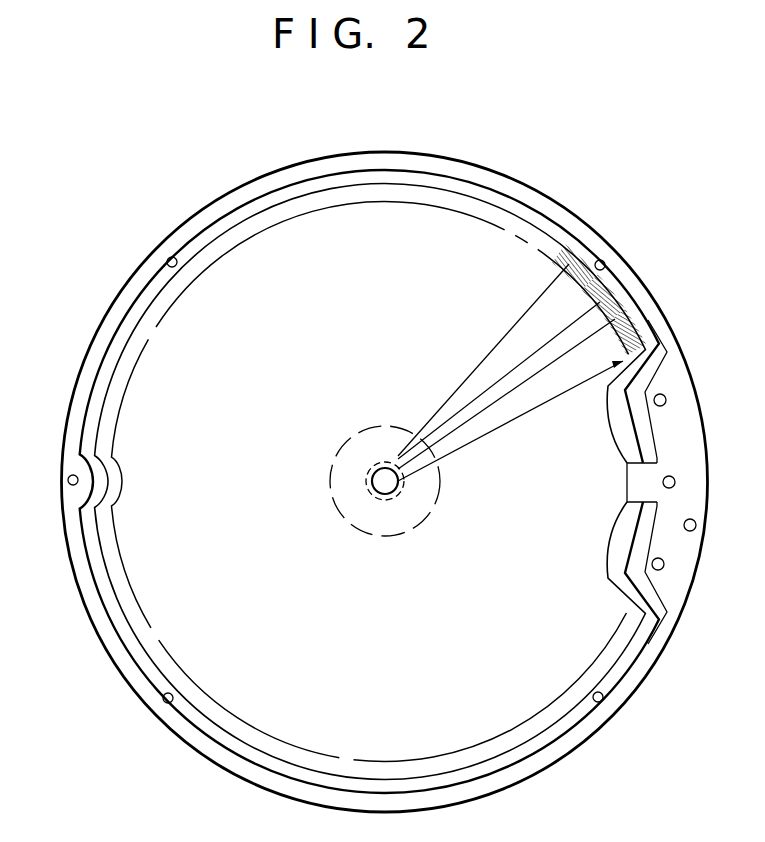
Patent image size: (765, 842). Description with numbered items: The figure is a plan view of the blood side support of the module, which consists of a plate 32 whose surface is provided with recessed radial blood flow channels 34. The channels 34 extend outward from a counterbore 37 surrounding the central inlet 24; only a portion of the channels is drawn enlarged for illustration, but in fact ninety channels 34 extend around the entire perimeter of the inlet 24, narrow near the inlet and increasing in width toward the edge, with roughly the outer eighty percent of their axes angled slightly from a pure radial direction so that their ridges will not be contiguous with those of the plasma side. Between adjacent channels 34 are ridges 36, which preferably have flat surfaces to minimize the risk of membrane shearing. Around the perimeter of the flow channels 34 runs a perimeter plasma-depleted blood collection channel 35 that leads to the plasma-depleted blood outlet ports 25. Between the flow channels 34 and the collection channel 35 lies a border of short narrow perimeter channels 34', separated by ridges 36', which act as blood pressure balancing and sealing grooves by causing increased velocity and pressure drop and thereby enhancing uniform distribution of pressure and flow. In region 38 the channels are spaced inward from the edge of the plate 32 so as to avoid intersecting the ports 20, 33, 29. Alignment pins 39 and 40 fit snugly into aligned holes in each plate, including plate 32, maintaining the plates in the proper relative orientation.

The port 20 is at (664, 564).
The inlet 24 is at (386, 494).
The plasma-depleted blood outlet ports 25 is at (172, 262).
The port 29 is at (666, 400).
The plate 32 is at (386, 367).
The port 33 is at (675, 482).
The radial blood flow channels 34 is at (549, 368).
The short narrow perimeter channels 34' is at (545, 351).
The perimeter plasma-depleted blood collection channel 35 is at (219, 742).
The ridges 36 is at (483, 360).
The ridges 36' is at (560, 390).
The counterbore 37 is at (400, 483).
The region 38 is at (684, 603).
The alignment pin 39 is at (696, 525).
The alignment pin 40 is at (70, 484).